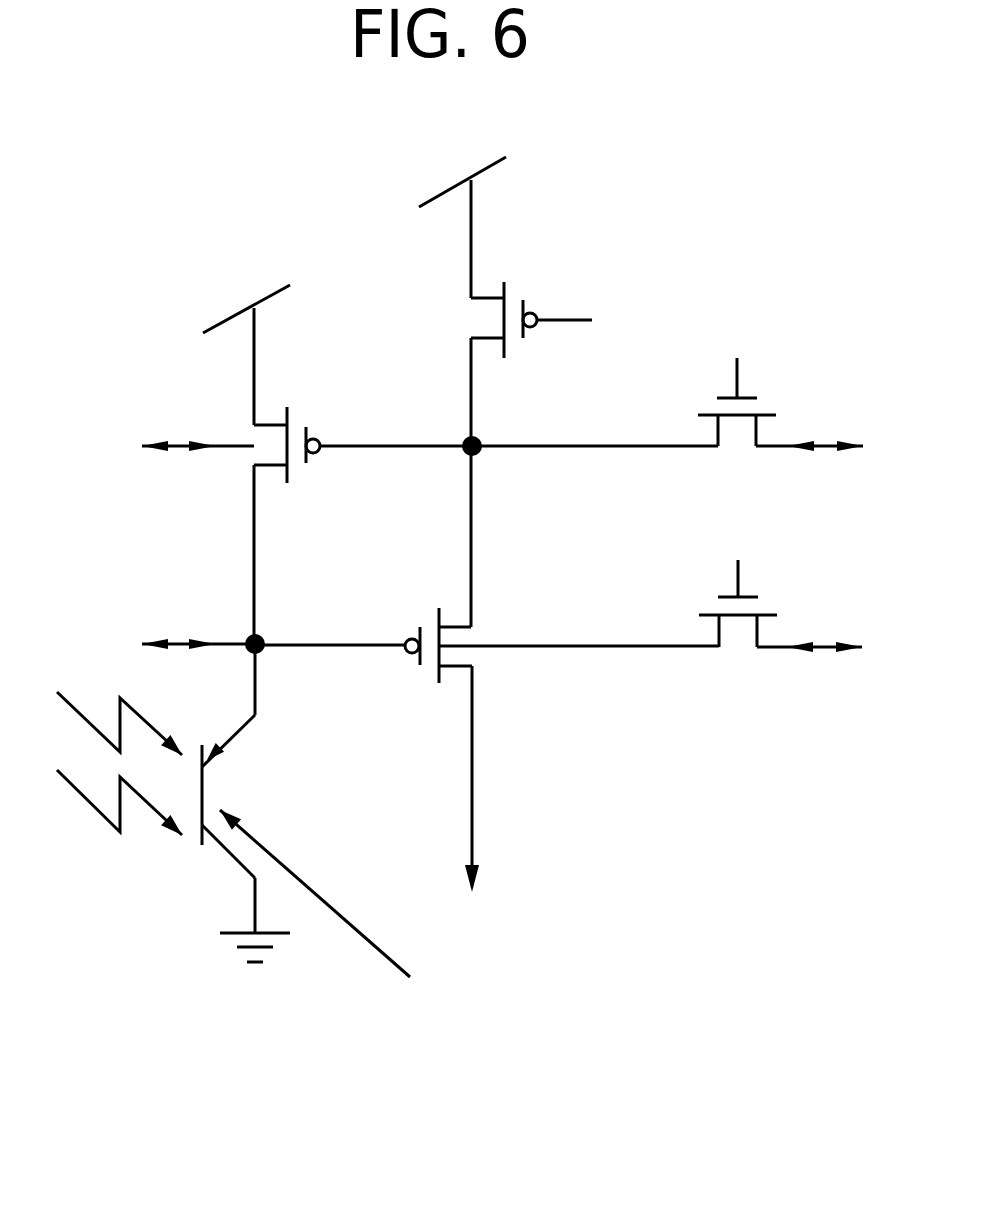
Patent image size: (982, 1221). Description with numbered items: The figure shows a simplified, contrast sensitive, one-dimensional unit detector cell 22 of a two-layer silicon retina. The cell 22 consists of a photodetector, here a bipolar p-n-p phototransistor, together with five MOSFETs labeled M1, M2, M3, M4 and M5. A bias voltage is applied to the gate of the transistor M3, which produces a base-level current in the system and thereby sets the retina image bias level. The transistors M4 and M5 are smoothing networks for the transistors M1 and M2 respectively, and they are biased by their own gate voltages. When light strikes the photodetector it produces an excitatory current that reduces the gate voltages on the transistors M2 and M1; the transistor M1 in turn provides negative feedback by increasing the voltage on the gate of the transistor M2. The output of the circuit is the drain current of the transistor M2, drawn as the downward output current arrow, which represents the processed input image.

The unit detector cell 22 is at (680, 192).
The M1 transistor M1 is at (337, 464).
The M2 transistor M2 is at (487, 739).
The M3 transistor M3 is at (505, 392).
The M4 transistor M4 is at (756, 402).
The M5 transistor M5 is at (755, 603).